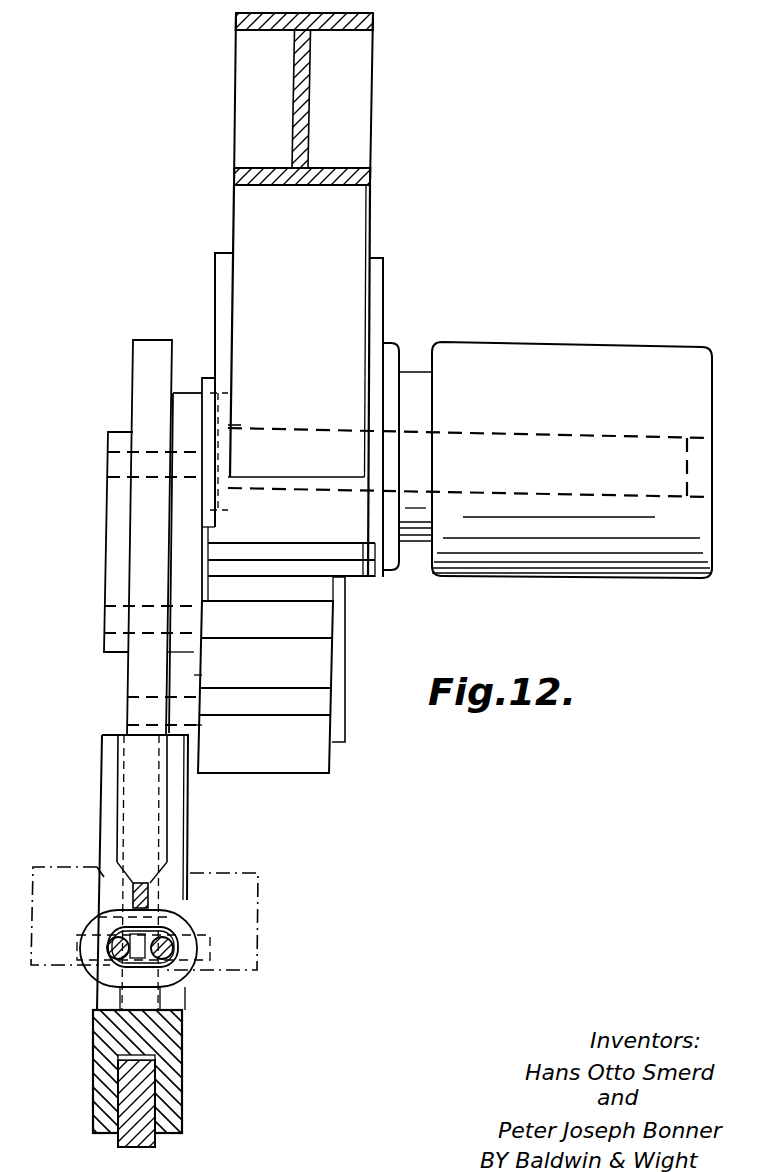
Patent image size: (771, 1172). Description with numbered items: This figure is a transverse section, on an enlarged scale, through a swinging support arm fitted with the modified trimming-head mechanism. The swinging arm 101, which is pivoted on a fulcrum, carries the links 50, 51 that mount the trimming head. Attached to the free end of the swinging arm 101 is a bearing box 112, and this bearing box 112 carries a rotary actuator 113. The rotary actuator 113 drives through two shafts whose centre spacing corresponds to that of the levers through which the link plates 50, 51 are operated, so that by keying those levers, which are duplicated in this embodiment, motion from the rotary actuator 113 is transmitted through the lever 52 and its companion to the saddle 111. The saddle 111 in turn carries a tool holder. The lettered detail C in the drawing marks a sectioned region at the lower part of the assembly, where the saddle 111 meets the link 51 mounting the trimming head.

The swinging arm 101 is at (353, 292).
The rotary actuator 113 is at (570, 358).
The bearing box 112 is at (355, 526).
The link 50 is at (137, 540).
The lever 52 is at (113, 588).
The saddle 111 is at (178, 848).
The section detail C is at (198, 918).
The link 51 is at (140, 1082).